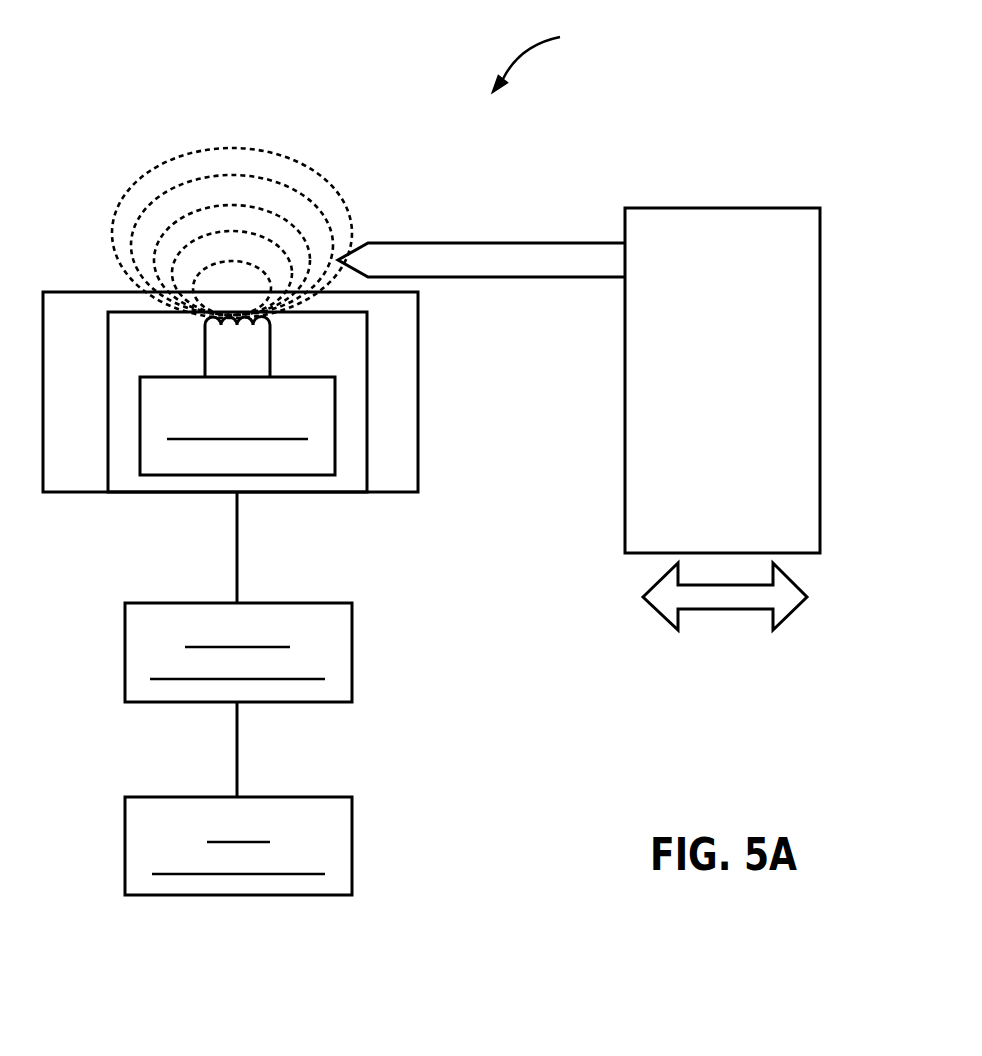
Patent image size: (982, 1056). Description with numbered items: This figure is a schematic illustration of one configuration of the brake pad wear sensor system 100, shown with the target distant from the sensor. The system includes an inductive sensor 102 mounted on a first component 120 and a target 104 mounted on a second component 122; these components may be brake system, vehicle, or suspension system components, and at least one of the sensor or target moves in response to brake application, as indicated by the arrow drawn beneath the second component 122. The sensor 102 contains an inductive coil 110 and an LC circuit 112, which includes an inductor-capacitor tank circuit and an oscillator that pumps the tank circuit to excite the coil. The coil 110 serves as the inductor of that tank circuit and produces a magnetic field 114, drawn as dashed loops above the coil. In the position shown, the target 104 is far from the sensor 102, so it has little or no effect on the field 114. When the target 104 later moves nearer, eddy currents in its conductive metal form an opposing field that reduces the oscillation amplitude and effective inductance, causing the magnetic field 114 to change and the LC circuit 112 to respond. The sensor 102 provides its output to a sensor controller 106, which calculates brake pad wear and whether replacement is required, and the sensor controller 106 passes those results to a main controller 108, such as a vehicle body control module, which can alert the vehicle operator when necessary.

The brake pad wear sensor system 100 is at (548, 58).
The inductive sensor 102 is at (352, 467).
The target 104 is at (447, 252).
The sensor controller 106 is at (352, 652).
The main controller 108 is at (352, 848).
The inductive coil 110 is at (252, 318).
The LC circuit 112 is at (207, 457).
The magnetic field 114 is at (145, 172).
The first component 120 is at (387, 480).
The second component 122 is at (717, 227).